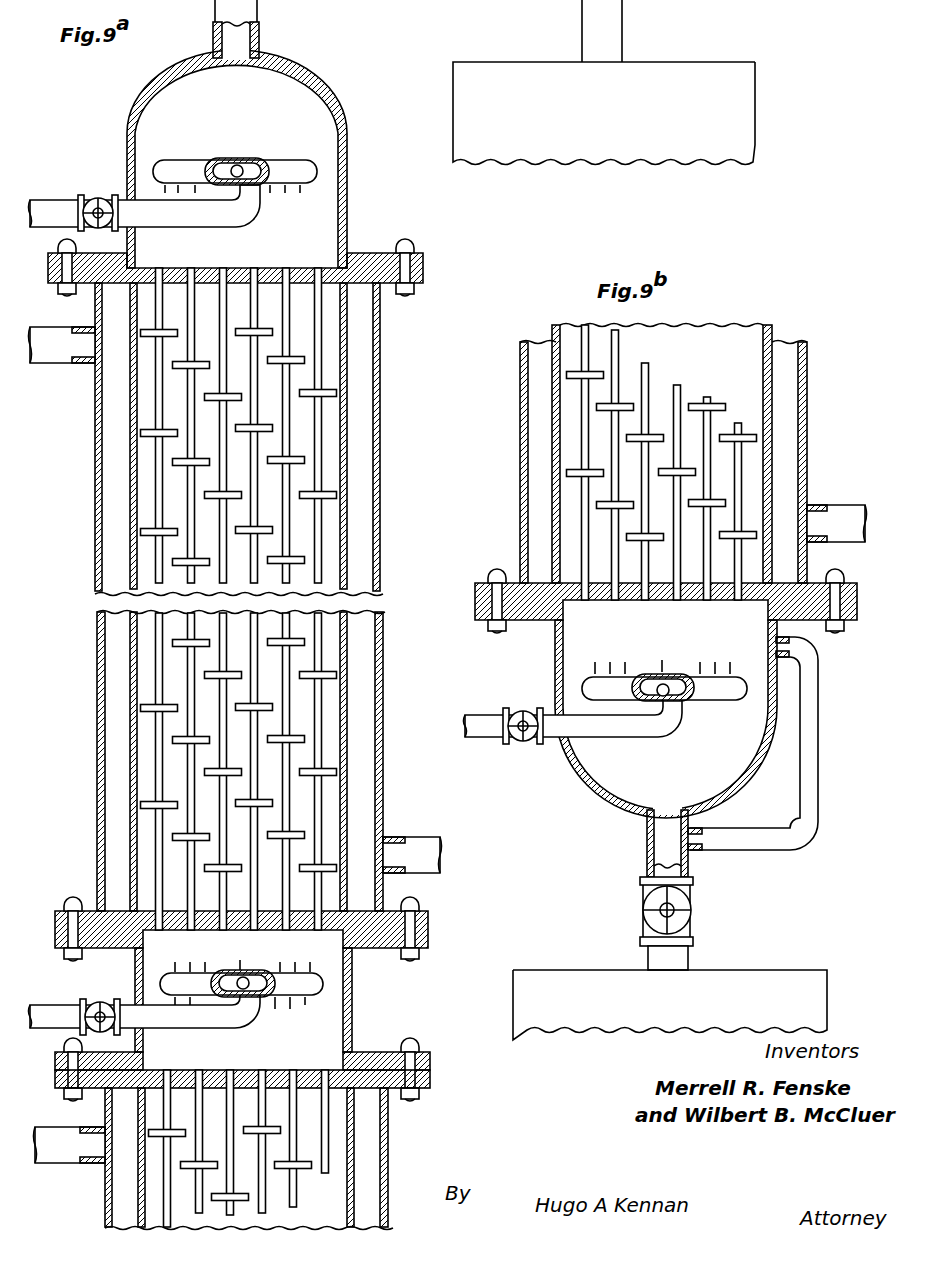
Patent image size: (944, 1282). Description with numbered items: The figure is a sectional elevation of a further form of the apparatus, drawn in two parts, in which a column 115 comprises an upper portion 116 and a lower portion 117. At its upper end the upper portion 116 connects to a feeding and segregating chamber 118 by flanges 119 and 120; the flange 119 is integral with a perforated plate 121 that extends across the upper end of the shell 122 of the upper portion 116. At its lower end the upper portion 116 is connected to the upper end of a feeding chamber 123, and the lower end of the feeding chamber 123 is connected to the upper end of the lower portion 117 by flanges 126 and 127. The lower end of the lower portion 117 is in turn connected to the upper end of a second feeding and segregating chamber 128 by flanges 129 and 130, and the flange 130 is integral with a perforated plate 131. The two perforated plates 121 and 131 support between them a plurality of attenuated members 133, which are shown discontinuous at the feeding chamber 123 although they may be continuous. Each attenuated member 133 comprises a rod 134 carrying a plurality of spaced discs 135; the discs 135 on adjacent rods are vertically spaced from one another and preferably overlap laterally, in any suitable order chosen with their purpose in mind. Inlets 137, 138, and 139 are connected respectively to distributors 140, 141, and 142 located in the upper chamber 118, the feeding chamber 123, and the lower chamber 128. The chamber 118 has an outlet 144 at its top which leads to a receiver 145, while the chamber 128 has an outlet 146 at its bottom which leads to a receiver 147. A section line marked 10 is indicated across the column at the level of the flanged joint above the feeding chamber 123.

In FIG. 9A, the section line 10 is at (42, 916).
In FIG. 9B, the section line 10 is at (445, 918).
In FIG. 9A, the column 115 is at (395, 683).
In FIG. 9A, the upper portion 116 is at (350, 558).
In FIG. 9A, the lower portion 117 is at (355, 1197).
In FIG. 9B, the lower portion 117 is at (773, 452).
In FIG. 9A, the feeding and segregating chamber 118 is at (323, 137).
In FIG. 9A, the flange 119 is at (428, 283).
In FIG. 9A, the flange 120 is at (423, 258).
In FIG. 9A, the perforated plate 121 is at (150, 268).
In FIG. 9A, the shell 122 is at (333, 472).
In FIG. 9A, the feeding chamber 123 is at (335, 1005).
In FIG. 9A, the flange 126 is at (385, 1050).
In FIG. 9A, the flange 127 is at (430, 1079).
In FIG. 9B, the feeding and segregating chamber 128 is at (607, 770).
In FIG. 9B, the flange 129 is at (527, 622).
In FIG. 9B, the flange 130 is at (478, 586).
In FIG. 9B, the perforated plate 131 is at (757, 600).
In FIG. 9A, the attenuated member 133 is at (333, 1150).
In FIG. 9B, the attenuated member 133 is at (572, 450).
In FIG. 9A, the rod 134 is at (193, 887).
In FIG. 9B, the rod 134 is at (707, 400).
In FIG. 9A, the disc 135 is at (147, 805).
In FIG. 9B, the disc 135 is at (600, 408).
In FIG. 9A, the inlet 137 is at (85, 196).
In FIG. 9A, the inlet 138 is at (88, 1003).
In FIG. 9B, the inlet 139 is at (492, 733).
In FIG. 9A, the distributor 140 is at (278, 178).
In FIG. 9A, the distributor 141 is at (287, 998).
In FIG. 9B, the distributor 142 is at (712, 703).
In FIG. 9A, the outlet 144 is at (305, 0).
In FIG. 9A, the receiver 145 is at (663, 78).
In FIG. 9B, the outlet 146 is at (648, 862).
In FIG. 9B, the receiver 147 is at (762, 978).